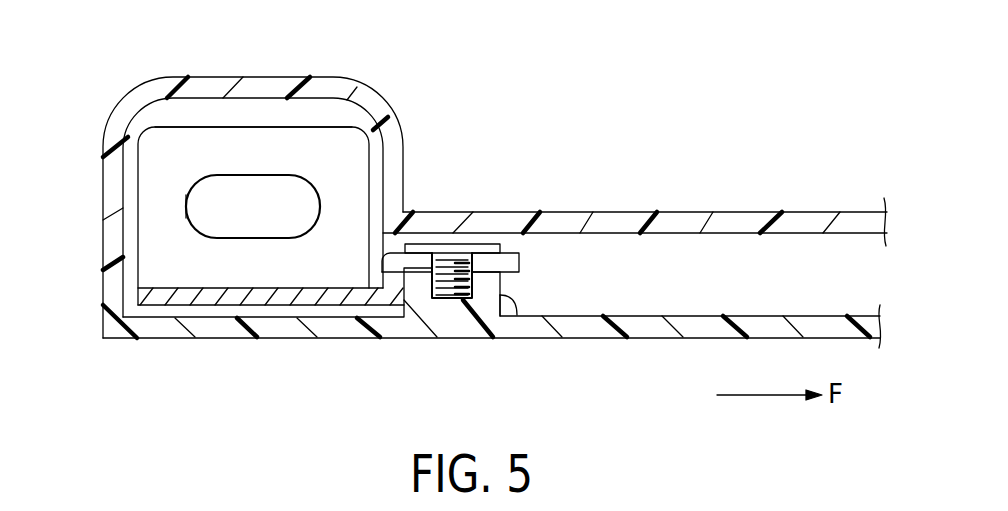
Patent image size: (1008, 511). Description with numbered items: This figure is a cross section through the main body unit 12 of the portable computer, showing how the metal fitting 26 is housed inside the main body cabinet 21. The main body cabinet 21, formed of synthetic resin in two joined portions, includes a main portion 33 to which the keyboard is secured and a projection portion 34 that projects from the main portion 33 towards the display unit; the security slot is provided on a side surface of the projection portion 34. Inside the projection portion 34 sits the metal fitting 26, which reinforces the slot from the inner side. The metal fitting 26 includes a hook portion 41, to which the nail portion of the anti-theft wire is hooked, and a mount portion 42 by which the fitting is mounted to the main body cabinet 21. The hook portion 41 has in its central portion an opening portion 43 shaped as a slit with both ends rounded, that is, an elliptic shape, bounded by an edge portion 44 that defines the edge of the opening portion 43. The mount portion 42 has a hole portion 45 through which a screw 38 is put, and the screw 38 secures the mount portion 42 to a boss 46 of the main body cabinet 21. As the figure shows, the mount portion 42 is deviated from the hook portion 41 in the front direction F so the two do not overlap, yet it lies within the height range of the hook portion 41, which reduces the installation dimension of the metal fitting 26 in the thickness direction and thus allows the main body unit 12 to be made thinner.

The main body unit 12 is at (752, 173).
The main body cabinet 21 is at (625, 338).
The metal fitting 26 is at (270, 127).
The main portion 33 is at (648, 212).
The projection portion 34 is at (400, 128).
The screw 38 is at (462, 252).
The hook portion 41 is at (215, 140).
The mount portion 42 is at (503, 268).
The opening portion 43 is at (290, 177).
The edge portion 44 is at (178, 204).
The hole portion 45 is at (418, 253).
The boss 46 is at (503, 297).